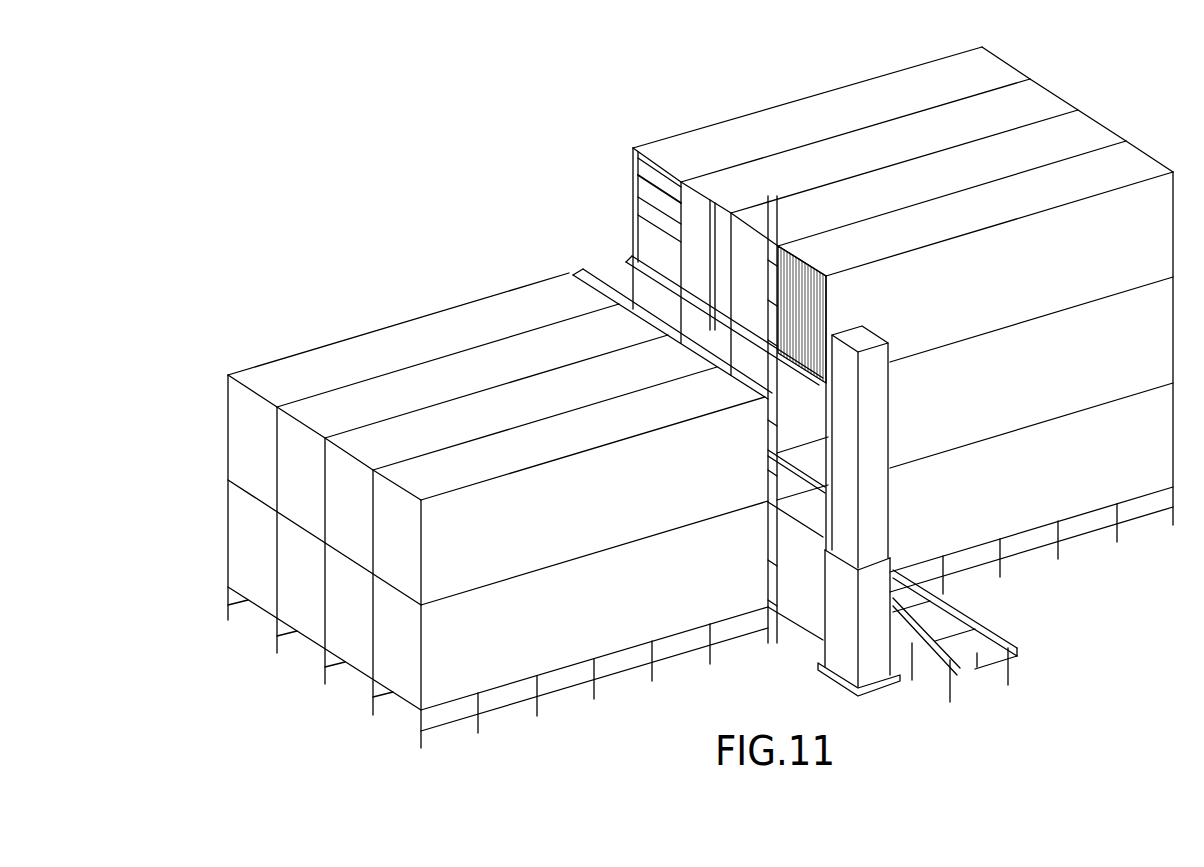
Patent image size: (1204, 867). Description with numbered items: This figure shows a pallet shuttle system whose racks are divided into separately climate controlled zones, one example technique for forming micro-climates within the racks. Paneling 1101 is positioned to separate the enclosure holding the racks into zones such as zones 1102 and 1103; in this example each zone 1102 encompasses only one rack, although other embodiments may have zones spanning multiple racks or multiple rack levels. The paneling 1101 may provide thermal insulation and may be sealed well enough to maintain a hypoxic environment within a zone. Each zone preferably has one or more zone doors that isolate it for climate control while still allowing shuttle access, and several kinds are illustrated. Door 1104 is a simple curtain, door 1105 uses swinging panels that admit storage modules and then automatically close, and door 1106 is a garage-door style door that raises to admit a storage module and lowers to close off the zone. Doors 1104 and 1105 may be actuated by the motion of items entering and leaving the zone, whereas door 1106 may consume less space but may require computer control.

The paneling 1101 is at (753, 290).
The zone 1102 is at (807, 108).
The zone 1103 is at (870, 135).
The door 1104 is at (820, 303).
The door 1105 is at (695, 213).
The door 1106 is at (650, 190).